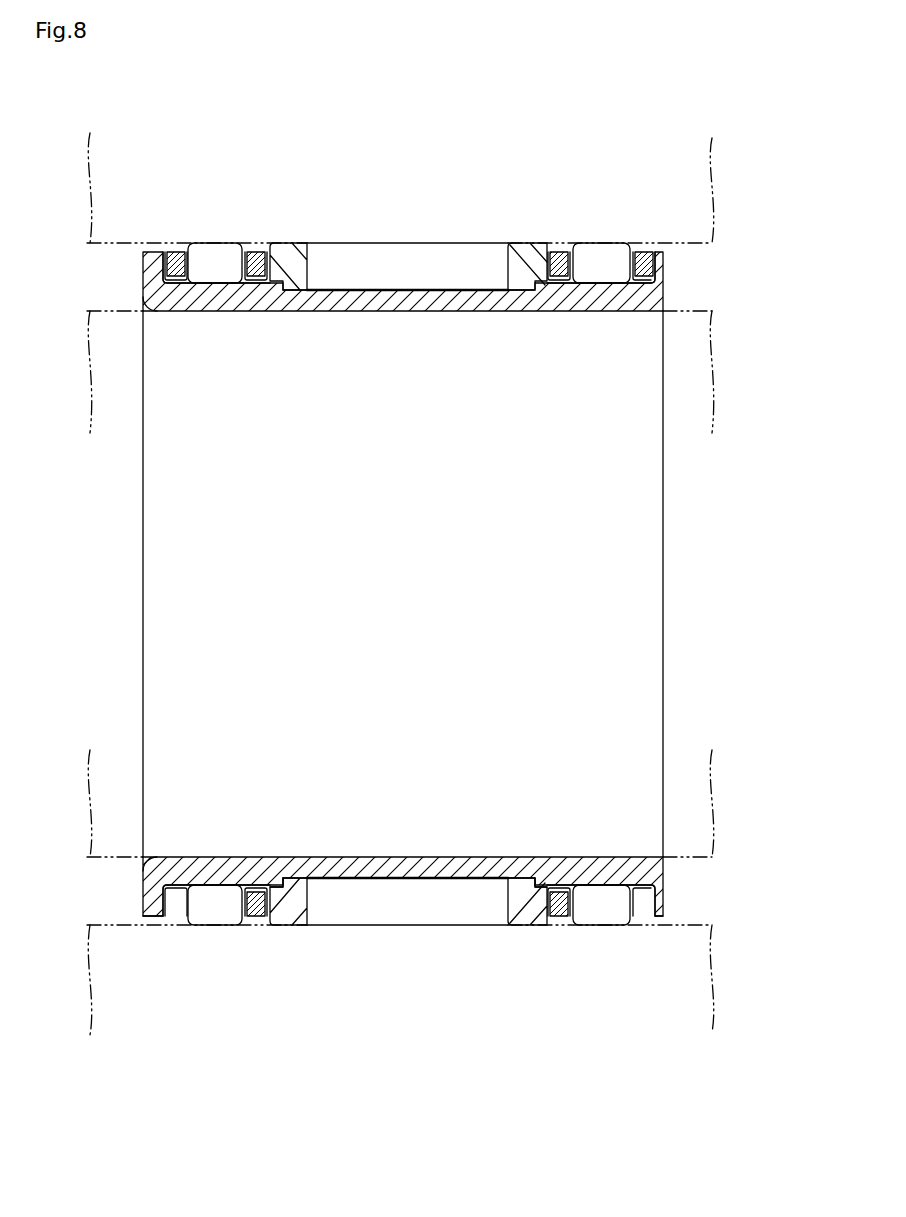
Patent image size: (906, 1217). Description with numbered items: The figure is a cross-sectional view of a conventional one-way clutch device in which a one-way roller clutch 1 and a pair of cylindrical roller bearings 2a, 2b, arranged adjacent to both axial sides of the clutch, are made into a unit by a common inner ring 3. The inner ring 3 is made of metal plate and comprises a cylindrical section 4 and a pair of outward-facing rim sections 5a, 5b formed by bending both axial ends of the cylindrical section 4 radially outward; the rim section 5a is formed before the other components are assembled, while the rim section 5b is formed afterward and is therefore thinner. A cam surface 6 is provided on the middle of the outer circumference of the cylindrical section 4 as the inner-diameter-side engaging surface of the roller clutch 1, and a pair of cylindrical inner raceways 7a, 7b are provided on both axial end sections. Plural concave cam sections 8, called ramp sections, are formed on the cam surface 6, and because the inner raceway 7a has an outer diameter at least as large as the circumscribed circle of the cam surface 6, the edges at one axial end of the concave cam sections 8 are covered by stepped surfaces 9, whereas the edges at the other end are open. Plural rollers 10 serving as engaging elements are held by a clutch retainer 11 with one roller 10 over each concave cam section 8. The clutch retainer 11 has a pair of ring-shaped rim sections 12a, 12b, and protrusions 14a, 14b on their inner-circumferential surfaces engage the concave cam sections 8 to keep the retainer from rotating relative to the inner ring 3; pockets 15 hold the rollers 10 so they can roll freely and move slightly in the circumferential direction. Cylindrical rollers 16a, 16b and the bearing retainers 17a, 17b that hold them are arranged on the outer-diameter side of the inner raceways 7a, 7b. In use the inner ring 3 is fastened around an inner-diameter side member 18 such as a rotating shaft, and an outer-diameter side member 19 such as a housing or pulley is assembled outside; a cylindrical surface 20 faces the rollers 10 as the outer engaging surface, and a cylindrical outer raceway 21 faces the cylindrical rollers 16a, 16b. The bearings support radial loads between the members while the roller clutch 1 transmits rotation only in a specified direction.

The one-way roller clutch 1 is at (392, 241).
The cylindrical roller bearing 2a is at (205, 241).
The cylindrical roller bearing 2b is at (613, 241).
The inner ring 3 is at (357, 308).
The cylindrical section 4 is at (360, 857).
The outward-facing rim section 5a is at (150, 885).
The outward-facing rim section 5b is at (667, 886).
The cam surface 6 is at (398, 290).
The cylindrical inner raceway 7a is at (228, 880).
The cylindrical inner raceway 7b is at (605, 884).
The concave cam section 8 is at (457, 285).
The stepped surface 9 is at (277, 252).
The roller 10 is at (347, 243).
The clutch retainer 11 is at (527, 258).
The ring-shaped rim section 12a is at (272, 915).
The ring-shaped rim section 12b is at (528, 903).
The protrusion 14a is at (298, 292).
The protrusion 14b is at (530, 292).
The pocket 15 is at (493, 250).
The cylindrical roller 16a is at (228, 243).
The cylindrical roller 16b is at (588, 243).
The bearing retainer 17a is at (172, 251).
The bearing retainer 17b is at (643, 252).
The inner-diameter side member 18 is at (690, 368).
The outer-diameter side member 19 is at (710, 172).
The cylindrical surface 20 is at (435, 243).
The cylindrical outer raceway 21 is at (193, 920).